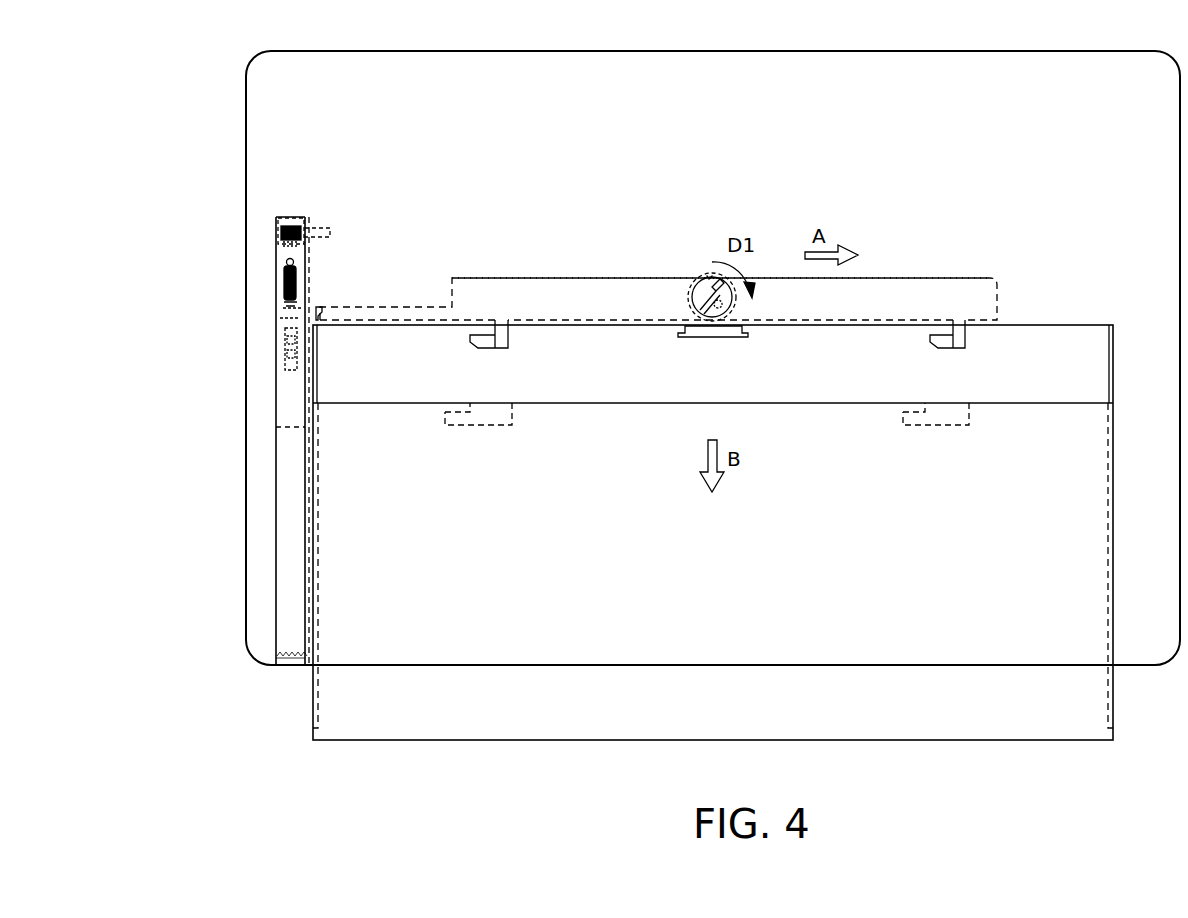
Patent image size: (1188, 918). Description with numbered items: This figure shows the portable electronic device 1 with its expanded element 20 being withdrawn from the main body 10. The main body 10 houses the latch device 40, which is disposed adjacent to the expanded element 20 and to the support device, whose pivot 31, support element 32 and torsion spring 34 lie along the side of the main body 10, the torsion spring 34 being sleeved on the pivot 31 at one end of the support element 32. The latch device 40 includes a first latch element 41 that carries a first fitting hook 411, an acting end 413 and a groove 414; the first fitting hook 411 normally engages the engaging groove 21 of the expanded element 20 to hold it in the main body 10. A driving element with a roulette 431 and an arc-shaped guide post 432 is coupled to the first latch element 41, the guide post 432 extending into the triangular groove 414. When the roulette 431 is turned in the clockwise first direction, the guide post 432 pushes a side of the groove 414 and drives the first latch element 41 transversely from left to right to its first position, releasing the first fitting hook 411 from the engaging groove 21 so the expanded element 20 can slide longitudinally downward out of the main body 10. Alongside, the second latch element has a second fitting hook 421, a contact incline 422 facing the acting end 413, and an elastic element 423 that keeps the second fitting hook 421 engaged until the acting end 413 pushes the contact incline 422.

The portable electronic device 1 is at (202, 108).
The main body 10 is at (258, 175).
The expanded element 20 is at (880, 718).
The engaging groove 21 is at (480, 424).
The pivot 31 is at (280, 258).
The support element 32 is at (292, 462).
The torsion spring 34 is at (275, 233).
The latch device 40 is at (998, 270).
The first latch element 41 is at (560, 298).
The first fitting hook 411 is at (485, 342).
The acting end 413 is at (320, 316).
The groove 414 is at (700, 282).
The second fitting hook 421 is at (300, 382).
The contact incline 422 is at (303, 311).
The elastic element 423 is at (278, 290).
The roulette 431 is at (696, 310).
The guide post 432 is at (732, 303).